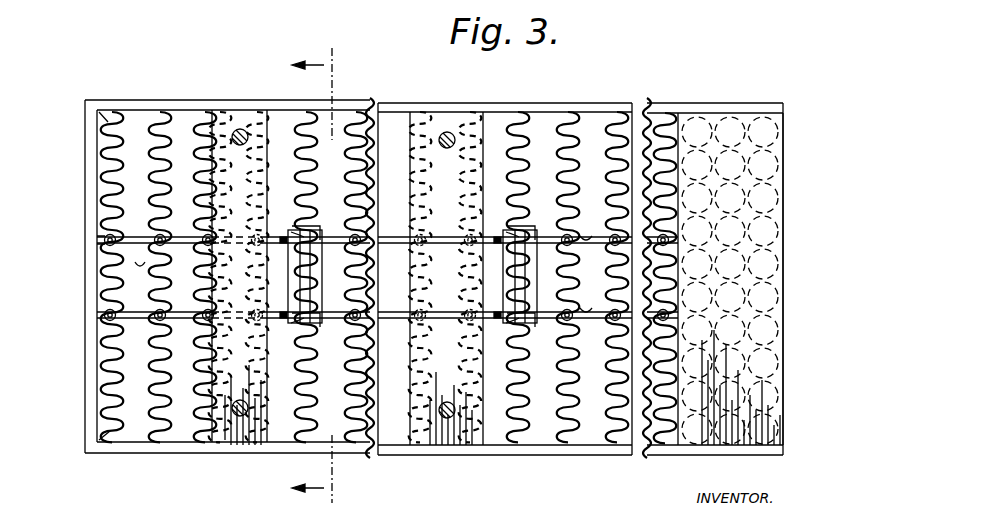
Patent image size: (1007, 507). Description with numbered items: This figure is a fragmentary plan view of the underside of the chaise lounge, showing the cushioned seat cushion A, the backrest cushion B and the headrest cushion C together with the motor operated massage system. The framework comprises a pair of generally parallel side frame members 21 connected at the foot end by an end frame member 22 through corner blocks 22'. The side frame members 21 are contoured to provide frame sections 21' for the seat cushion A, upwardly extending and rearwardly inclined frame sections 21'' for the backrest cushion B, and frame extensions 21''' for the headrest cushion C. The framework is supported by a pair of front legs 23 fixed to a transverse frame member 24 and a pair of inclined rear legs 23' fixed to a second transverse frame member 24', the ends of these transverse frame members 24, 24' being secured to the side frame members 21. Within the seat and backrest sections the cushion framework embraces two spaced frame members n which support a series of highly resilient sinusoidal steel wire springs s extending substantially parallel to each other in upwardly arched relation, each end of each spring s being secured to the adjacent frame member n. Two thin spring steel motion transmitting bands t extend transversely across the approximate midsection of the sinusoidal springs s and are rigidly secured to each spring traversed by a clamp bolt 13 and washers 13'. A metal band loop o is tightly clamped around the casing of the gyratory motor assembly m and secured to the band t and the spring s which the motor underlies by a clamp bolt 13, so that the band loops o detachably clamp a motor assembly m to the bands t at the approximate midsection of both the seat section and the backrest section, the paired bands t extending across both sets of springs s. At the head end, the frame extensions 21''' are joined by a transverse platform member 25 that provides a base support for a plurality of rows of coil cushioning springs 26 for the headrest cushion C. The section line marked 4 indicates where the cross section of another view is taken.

The clamp bolt 13 is at (361, 276).
The washers 13' is at (74, 245).
The side frame members 21 is at (317, 279).
The frame sections for the seat cushion 21' is at (239, 275).
The frame sections for the backrest cushion 21'' is at (560, 280).
The frame extensions for the headrest cushion 21''' is at (772, 281).
The end frame member 22 is at (210, 276).
The corner blocks 22' is at (78, 270).
The front legs 23 is at (226, 308).
The inclined rear legs 23' is at (463, 282).
The transverse frame member 24 is at (239, 257).
The second transverse frame member 24' is at (446, 301).
The transverse platform member 25 is at (784, 184).
The coil cushioning springs 26 is at (700, 111).
The sinusoidal steel wire springs s is at (140, 110).
The motion transmitting bands t is at (140, 255).
The band loop o is at (312, 232).
The motor assembly m is at (326, 288).
The frame members n is at (565, 92).
The seat cushion A is at (168, 95).
The backrest cushion B is at (406, 96).
The headrest cushion C is at (730, 96).
The section line 4- 4 is at (321, 275).